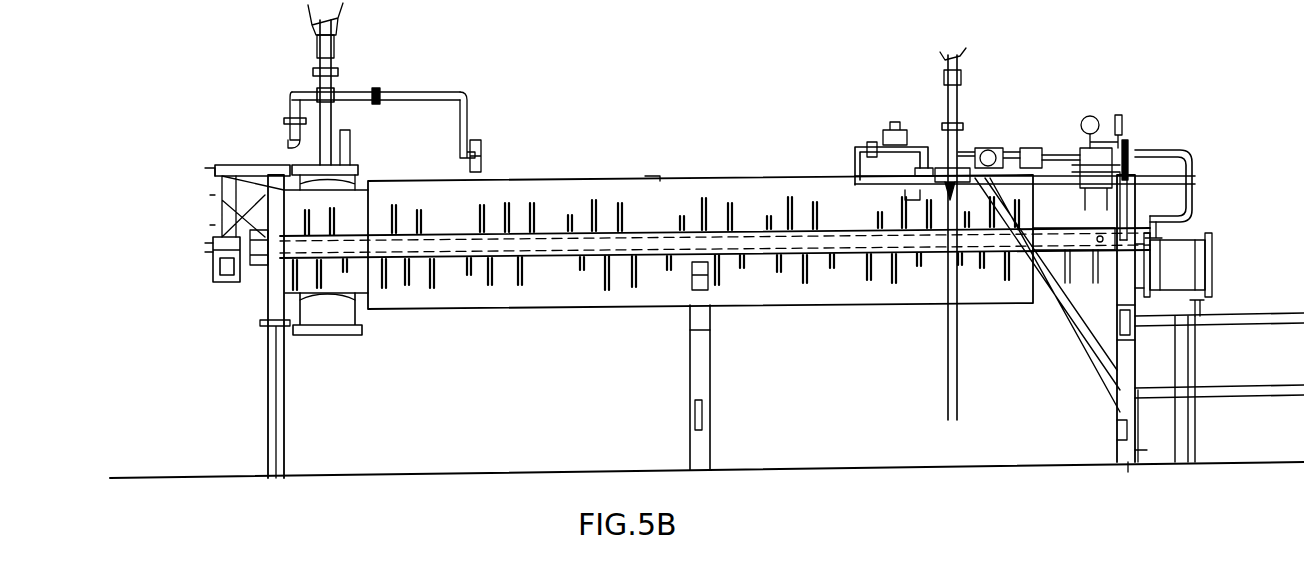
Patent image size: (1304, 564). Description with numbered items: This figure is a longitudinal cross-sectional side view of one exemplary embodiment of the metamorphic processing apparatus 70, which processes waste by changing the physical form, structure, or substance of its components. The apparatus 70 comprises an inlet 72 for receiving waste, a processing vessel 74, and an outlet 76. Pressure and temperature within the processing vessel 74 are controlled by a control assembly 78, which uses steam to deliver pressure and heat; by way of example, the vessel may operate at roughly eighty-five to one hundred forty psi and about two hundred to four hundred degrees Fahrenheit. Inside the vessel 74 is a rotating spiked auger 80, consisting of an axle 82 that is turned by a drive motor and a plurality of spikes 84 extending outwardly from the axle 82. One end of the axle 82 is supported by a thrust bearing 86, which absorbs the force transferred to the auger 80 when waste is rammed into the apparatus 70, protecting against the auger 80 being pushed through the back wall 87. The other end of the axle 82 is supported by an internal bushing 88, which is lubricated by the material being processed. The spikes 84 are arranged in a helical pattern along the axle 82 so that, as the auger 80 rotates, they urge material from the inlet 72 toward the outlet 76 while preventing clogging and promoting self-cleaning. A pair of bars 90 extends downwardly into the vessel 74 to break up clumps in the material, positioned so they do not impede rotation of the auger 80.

The metamorphic processing apparatus 70 is at (784, 94).
The inlet 72 is at (1178, 240).
The processing vessel 74 is at (641, 180).
The outlet 76 is at (345, 337).
The control assembly 78 is at (388, 94).
The rotating spiked auger 80 is at (767, 274).
The axle 82 is at (810, 240).
The spikes 84 is at (895, 277).
The thrust bearing 86 is at (233, 283).
The back wall 87 is at (236, 205).
The internal bushing 88 is at (1117, 328).
The bars 90 is at (1118, 170).